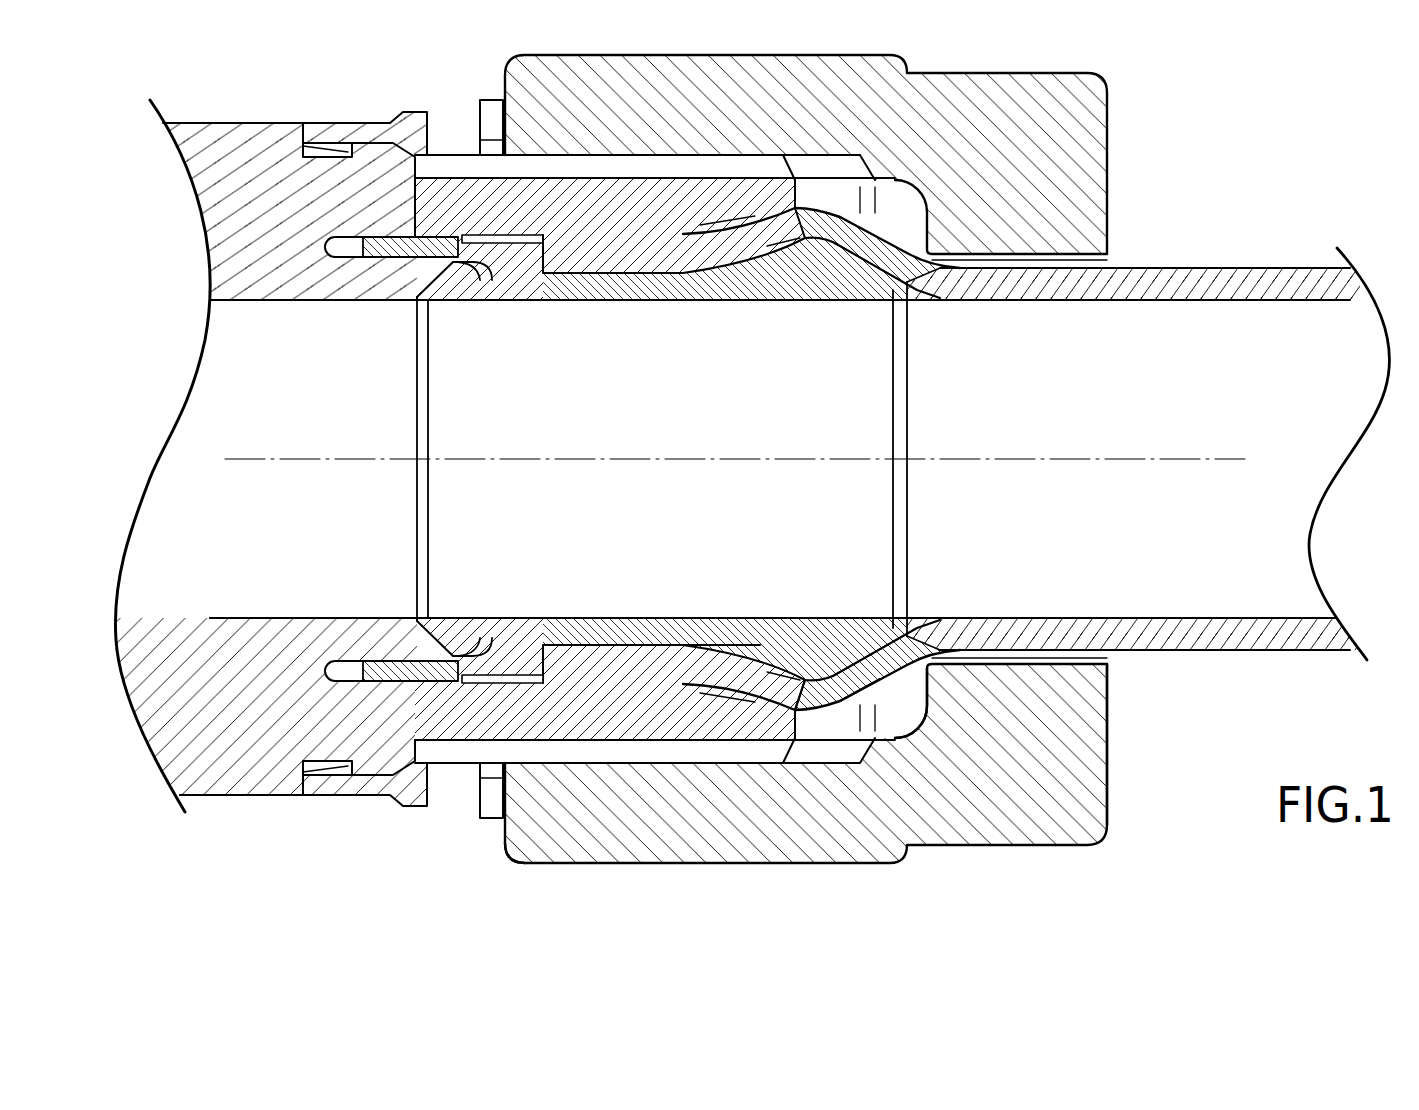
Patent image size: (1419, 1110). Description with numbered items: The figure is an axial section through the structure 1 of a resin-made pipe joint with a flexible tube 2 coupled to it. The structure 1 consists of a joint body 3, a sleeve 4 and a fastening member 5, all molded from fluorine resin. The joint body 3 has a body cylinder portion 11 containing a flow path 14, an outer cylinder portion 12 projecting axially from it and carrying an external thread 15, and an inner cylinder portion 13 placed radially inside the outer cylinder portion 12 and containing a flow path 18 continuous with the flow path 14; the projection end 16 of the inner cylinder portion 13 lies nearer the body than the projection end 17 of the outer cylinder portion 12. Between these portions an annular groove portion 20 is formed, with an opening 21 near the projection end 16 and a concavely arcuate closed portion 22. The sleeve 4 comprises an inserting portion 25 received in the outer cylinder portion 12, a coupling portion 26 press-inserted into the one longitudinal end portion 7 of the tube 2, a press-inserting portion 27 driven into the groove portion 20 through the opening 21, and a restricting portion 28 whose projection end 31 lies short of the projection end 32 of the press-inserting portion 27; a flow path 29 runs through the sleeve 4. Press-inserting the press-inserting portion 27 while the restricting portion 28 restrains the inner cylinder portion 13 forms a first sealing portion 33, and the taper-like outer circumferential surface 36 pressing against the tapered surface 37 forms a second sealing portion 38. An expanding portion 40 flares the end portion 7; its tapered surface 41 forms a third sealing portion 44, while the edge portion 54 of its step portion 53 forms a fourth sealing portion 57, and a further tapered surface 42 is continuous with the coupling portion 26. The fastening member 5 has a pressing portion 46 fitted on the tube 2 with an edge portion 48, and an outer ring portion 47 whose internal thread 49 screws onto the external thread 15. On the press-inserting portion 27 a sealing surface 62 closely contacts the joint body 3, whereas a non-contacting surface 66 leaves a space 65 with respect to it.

The structure of a resin-made pipe joint 1 is at (1193, 128).
The tube 2 is at (1292, 663).
The joint body 3 is at (241, 109).
The sleeve 4 is at (924, 518).
The fastening member 5 is at (1132, 808).
The one longitudinal end portion 7 is at (608, 242).
The body cylinder portion 11 is at (240, 797).
The outer cylinder portion 12 is at (453, 740).
The inner cylinder portion 13 is at (394, 650).
The flow path 14 is at (216, 536).
The external thread 15 is at (543, 167).
The projection end 16 is at (465, 270).
The projection end 17 is at (823, 192).
The flow path 18 is at (385, 428).
The groove portion 20 is at (338, 236).
The opening 21 is at (450, 240).
The closed portion 22 is at (343, 683).
The inserting portion 25 is at (503, 618).
The coupling portion 26 is at (668, 618).
The press-inserting portion 27 is at (340, 661).
The restricting portion 28 is at (455, 633).
The flow path 29 is at (687, 428).
The projection end 31 is at (400, 287).
The projection end 32 is at (338, 245).
The first sealing portion 33 is at (398, 222).
The outer circumferential surface 36 is at (400, 683).
The tapered surface 37 is at (438, 665).
The second sealing portion 38 is at (447, 296).
The expanding portion 40 is at (872, 700).
The tapered surface 41 is at (917, 727).
The tapered surface 42 is at (717, 236).
The third sealing portion 44 is at (894, 263).
The pressing portion 46 is at (1108, 700).
The outer ring portion 47 is at (503, 866).
The edge portion 48 is at (800, 688).
The internal thread 49 is at (848, 160).
The step portion 53 is at (814, 655).
The edge portion 54 is at (800, 683).
The fourth sealing portion 57 is at (745, 705).
The sealing surface 62 is at (352, 150).
The space 65 is at (484, 766).
The non-contacting surface 66 is at (497, 242).